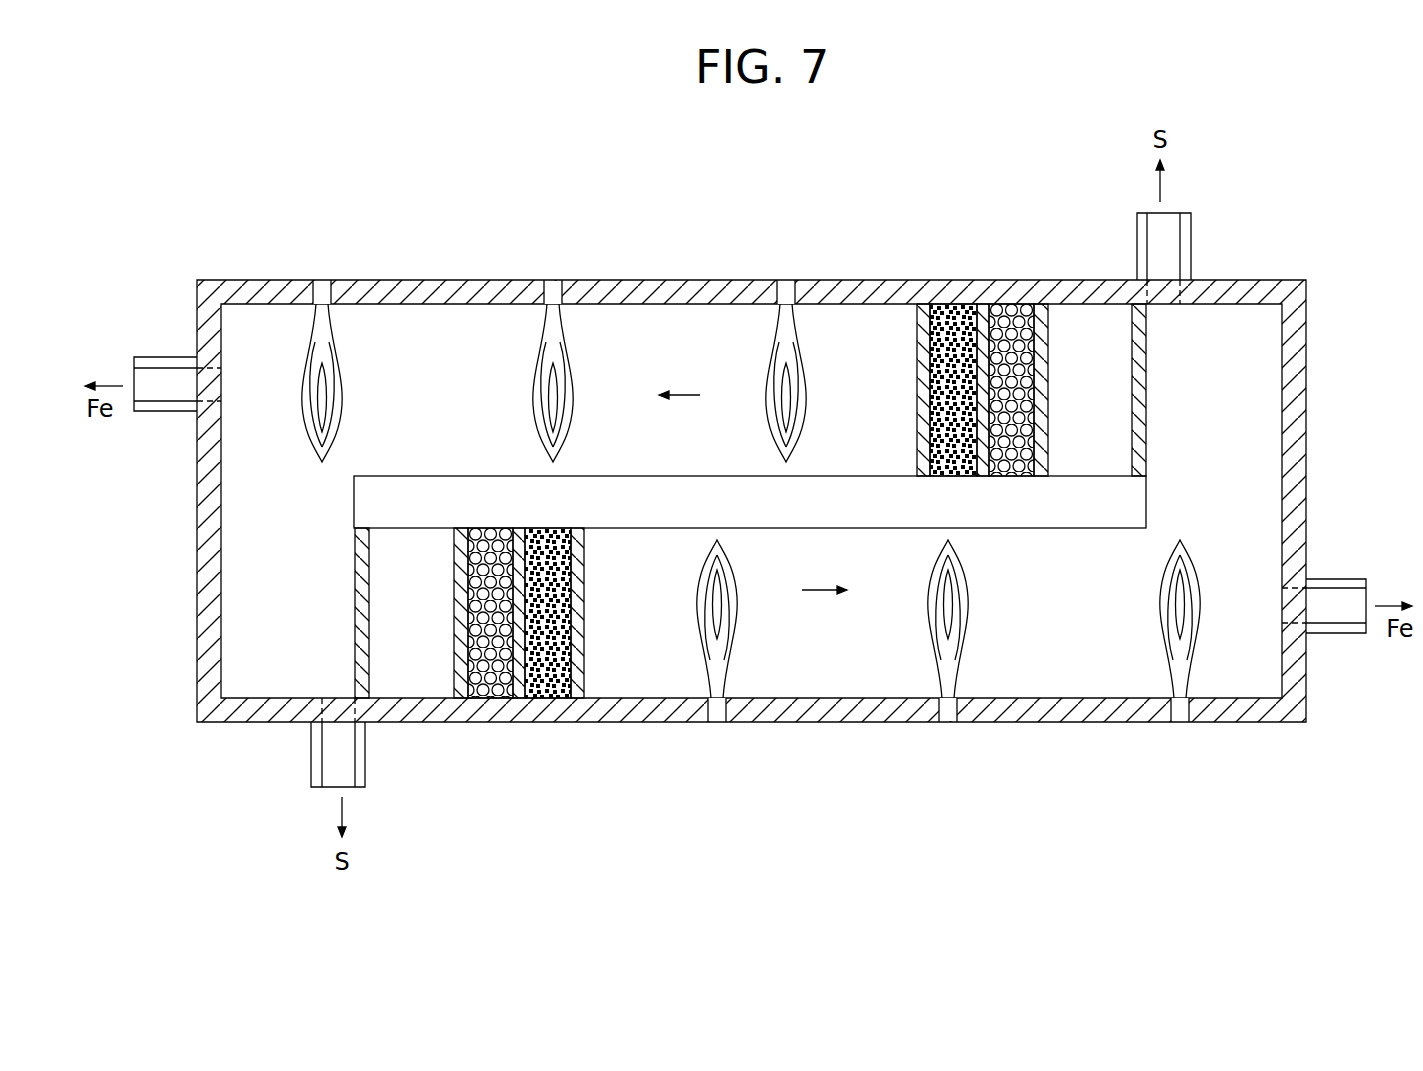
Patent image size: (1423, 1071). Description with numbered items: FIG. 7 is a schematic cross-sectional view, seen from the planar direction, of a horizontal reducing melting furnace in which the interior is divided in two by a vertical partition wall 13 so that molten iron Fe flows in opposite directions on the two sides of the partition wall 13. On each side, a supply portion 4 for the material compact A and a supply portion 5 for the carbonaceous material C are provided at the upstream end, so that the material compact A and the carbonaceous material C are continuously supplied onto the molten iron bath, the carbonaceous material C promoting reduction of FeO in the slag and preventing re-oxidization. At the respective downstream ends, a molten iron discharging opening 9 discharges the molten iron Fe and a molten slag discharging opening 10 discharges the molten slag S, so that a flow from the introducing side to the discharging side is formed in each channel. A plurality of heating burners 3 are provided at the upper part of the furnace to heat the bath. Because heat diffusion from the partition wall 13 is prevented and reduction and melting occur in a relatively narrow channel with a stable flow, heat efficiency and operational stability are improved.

The burner 3 is at (322, 279).
The supply portion for material compact 4 is at (1048, 340).
The supply portion for carbonaceous material 5 is at (917, 341).
The molten iron discharging opening 9 is at (158, 356).
The molten slag discharging opening 10 is at (1191, 232).
The vertical partition wall 13 is at (425, 476).
The material compact A is at (1013, 304).
The carbonaceous material C is at (953, 304).